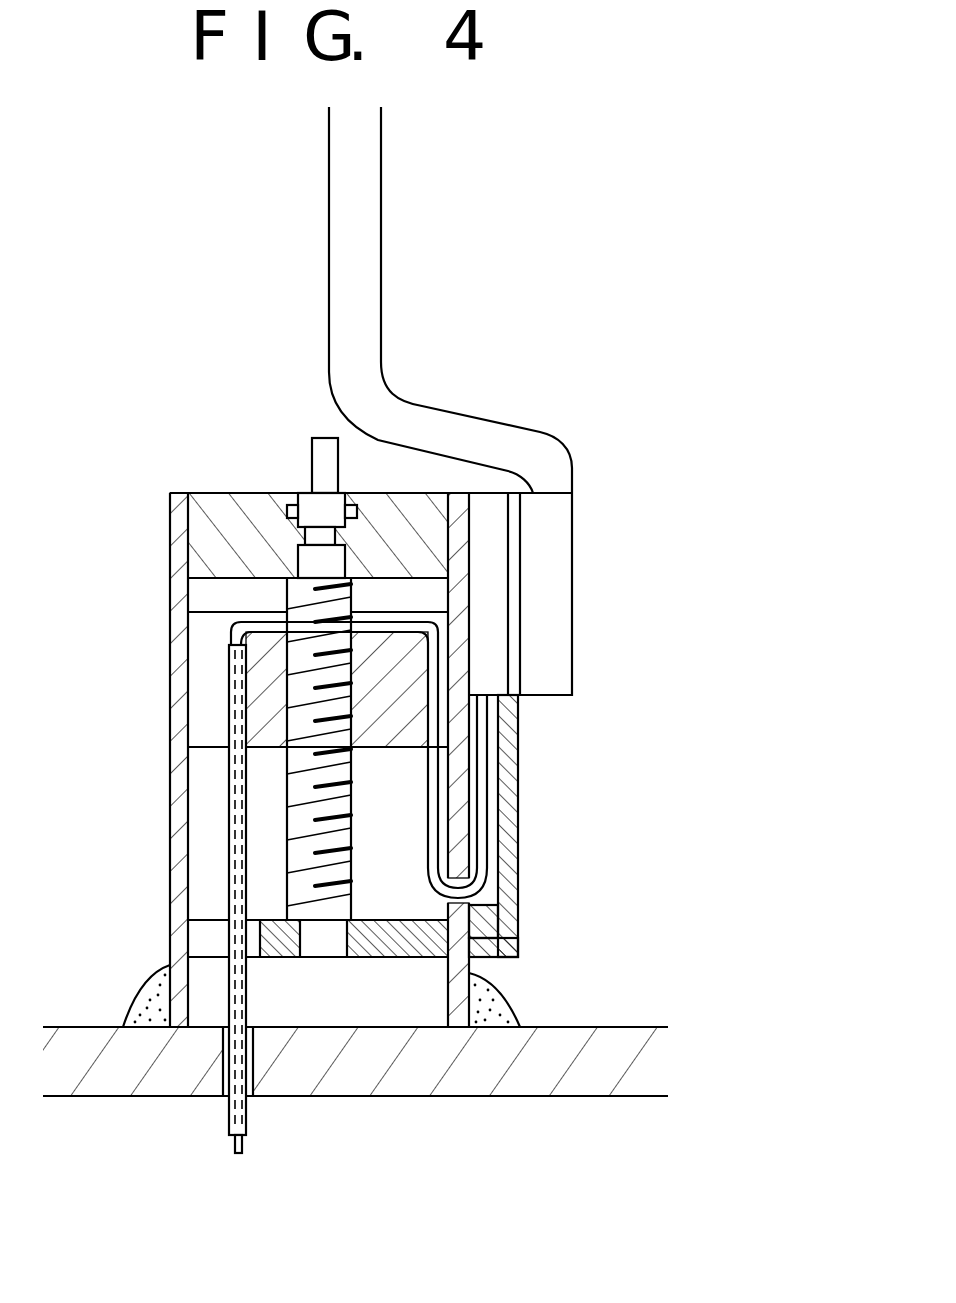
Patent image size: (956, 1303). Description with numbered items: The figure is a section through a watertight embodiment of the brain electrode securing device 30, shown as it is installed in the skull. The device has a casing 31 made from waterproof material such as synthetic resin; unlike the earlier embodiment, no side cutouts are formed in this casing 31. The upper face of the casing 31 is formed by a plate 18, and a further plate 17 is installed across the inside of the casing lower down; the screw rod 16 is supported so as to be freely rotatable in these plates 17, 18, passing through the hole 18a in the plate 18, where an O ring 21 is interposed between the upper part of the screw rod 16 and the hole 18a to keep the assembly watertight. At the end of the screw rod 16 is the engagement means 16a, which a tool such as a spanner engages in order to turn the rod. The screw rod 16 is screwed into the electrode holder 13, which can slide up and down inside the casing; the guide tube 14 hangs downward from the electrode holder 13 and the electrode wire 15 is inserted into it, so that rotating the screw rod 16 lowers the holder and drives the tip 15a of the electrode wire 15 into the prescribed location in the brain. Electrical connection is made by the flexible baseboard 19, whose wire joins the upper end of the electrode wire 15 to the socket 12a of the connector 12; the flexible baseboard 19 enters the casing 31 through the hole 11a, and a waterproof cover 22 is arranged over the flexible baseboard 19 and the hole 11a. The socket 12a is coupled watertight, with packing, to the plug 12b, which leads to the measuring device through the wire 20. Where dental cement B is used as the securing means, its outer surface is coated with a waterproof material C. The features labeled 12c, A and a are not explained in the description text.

The hole 11a is at (458, 910).
The connector 12 is at (572, 598).
The socket 12a is at (490, 633).
The plug 12b is at (552, 530).
The passage in connecting block 12c is at (522, 668).
The electrode holder 13 is at (202, 642).
The guide tube 14 is at (233, 782).
The electrode wire 15 is at (233, 835).
The tip 15a is at (243, 1140).
The screw rod 16 is at (312, 817).
The engagement means 16a is at (323, 450).
The plate 17 is at (358, 943).
The plate 18 is at (222, 503).
The hole 18a is at (308, 490).
The flexible baseboard 19 is at (483, 835).
The wire 20 is at (467, 427).
The O ring 21 is at (293, 512).
The cover 22 is at (505, 778).
The brain electrode securing device 30 is at (718, 517).
The casing 31 is at (167, 713).
The wall A is at (620, 1022).
The dental cement B is at (500, 1010).
The waterproof material C is at (153, 983).
The hole a is at (230, 1100).